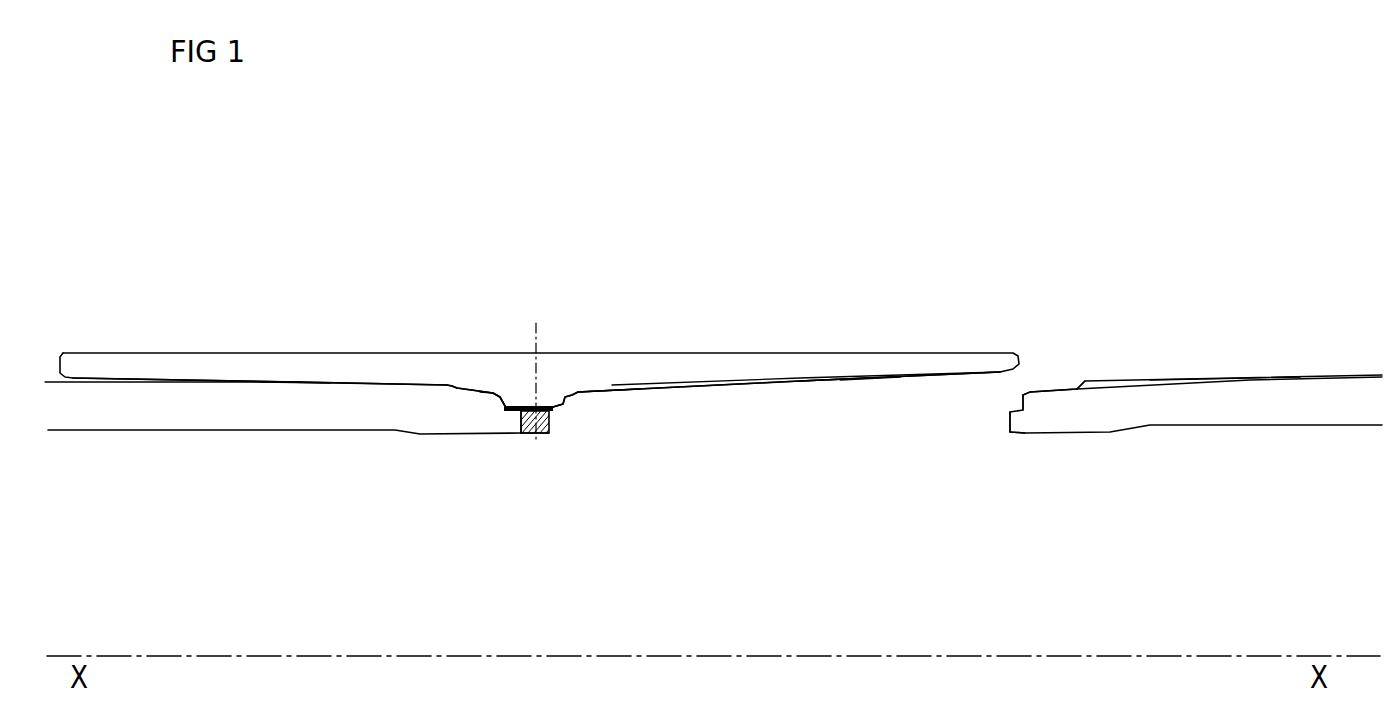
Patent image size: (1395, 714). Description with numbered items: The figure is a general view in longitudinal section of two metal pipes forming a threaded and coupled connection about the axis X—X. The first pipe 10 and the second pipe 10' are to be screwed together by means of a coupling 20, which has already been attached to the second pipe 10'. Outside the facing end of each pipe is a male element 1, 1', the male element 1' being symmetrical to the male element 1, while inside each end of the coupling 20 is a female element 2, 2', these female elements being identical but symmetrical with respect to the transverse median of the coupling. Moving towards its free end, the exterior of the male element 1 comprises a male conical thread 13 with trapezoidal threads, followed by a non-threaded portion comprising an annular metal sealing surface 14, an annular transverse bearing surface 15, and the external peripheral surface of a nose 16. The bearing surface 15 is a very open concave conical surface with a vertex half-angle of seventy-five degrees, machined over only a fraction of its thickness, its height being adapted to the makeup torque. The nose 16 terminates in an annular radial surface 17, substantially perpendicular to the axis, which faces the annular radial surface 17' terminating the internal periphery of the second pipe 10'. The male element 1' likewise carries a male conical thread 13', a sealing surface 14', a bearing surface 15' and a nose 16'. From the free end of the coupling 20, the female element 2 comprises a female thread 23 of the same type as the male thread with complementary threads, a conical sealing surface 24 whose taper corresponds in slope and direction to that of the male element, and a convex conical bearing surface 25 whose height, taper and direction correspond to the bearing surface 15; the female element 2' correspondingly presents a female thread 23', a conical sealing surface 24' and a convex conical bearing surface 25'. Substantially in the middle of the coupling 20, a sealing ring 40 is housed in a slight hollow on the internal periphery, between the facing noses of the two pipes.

The male element 1 is at (1202, 298).
The male element 1' is at (539, 304).
The female element 2 is at (845, 467).
The female element 2' is at (284, 521).
The first pipe 10 is at (1196, 520).
The second pipe 10' is at (246, 513).
The male conical thread 13 is at (1234, 291).
The male conical thread 13' is at (186, 292).
The annular metal sealing surface 14 is at (1054, 298).
The annular metal sealing surface 14' is at (482, 304).
The annular transverse bearing surface 15 is at (980, 520).
The annular transverse bearing surface 15' is at (583, 304).
The nose 16 is at (1073, 530).
The nose 16' is at (533, 484).
The annular radial surface 17 is at (1020, 528).
The annular radial surface 17' is at (562, 465).
The coupling 20 is at (592, 367).
The female thread 23 is at (887, 417).
The female thread 23' is at (286, 513).
The conical sealing surface 24 is at (690, 418).
The conical sealing surface 24' is at (457, 475).
The convex conical bearing surface 25 is at (642, 450).
The convex conical bearing surface 25' is at (490, 521).
The sealing ring 40 is at (547, 435).